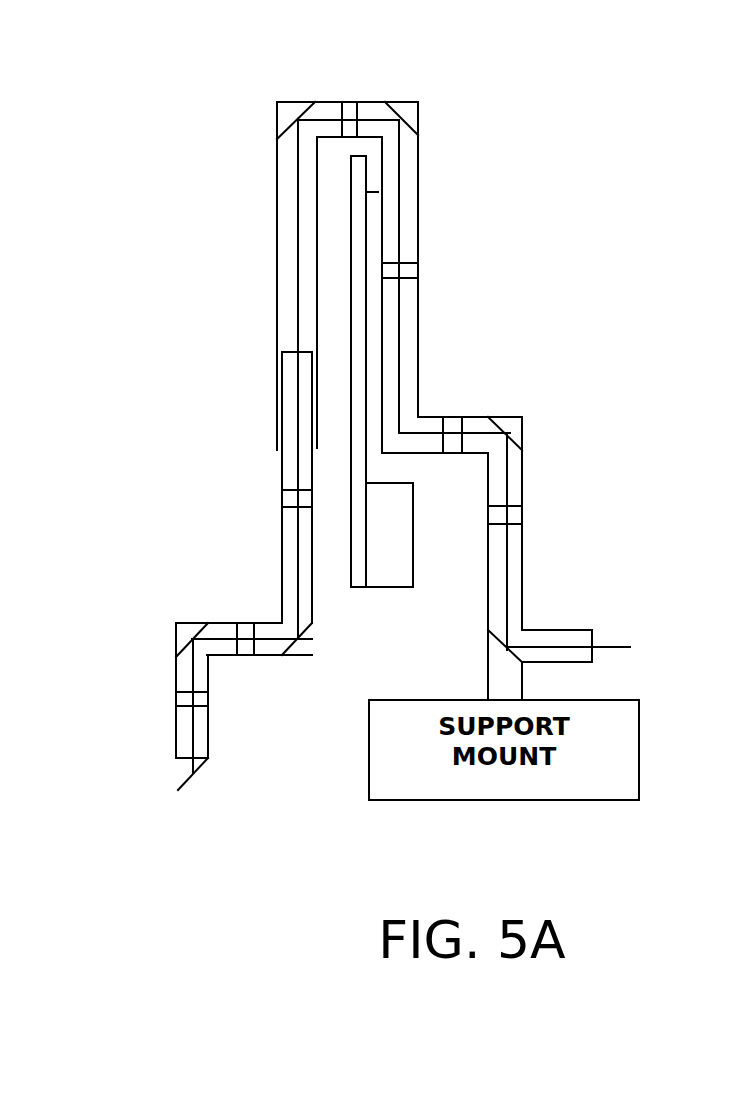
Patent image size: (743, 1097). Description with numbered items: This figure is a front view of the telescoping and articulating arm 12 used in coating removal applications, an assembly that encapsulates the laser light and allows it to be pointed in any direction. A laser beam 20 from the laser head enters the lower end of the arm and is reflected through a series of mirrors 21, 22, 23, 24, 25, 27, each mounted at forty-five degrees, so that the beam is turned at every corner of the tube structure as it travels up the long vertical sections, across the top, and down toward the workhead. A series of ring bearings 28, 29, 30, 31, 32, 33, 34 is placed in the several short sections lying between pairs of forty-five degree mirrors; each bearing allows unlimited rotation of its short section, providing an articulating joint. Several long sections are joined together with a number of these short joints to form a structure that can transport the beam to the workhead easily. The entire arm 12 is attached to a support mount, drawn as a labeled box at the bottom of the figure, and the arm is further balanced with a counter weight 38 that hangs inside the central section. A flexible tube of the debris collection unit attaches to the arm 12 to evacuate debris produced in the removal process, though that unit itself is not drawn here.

The articulating arm 12 is at (443, 219).
The laser beam 20 is at (615, 647).
The mirror 21 is at (506, 658).
The mirror 22 is at (510, 434).
The mirror 23 is at (406, 123).
The mirror 24 is at (279, 130).
The mirror 25 is at (300, 649).
The mirror 27 is at (197, 780).
The ring bearing 28 is at (523, 517).
The ring bearing 29 is at (452, 417).
The ring bearing 30 is at (420, 268).
The ring bearing 31 is at (353, 110).
The ring bearing 32 is at (283, 495).
The ring bearing 33 is at (246, 623).
The ring bearing 34 is at (176, 697).
The counter weight 38 is at (393, 588).